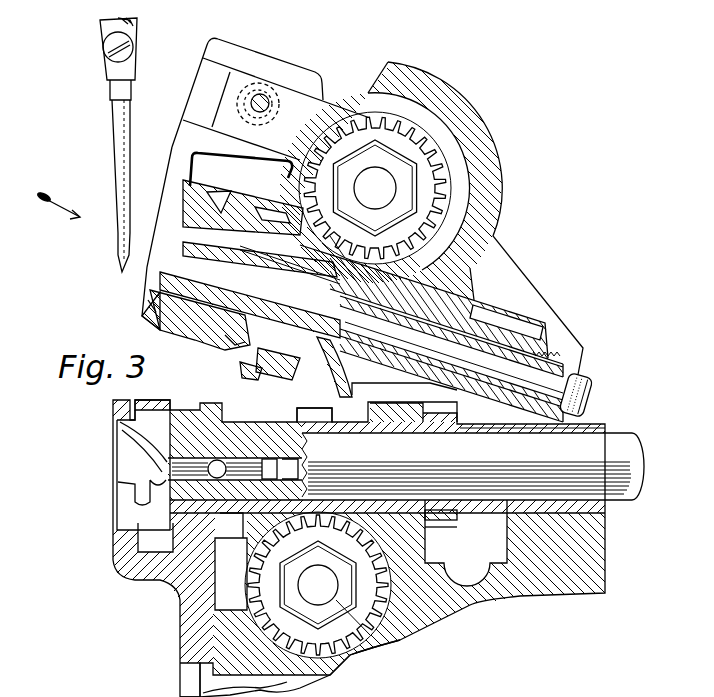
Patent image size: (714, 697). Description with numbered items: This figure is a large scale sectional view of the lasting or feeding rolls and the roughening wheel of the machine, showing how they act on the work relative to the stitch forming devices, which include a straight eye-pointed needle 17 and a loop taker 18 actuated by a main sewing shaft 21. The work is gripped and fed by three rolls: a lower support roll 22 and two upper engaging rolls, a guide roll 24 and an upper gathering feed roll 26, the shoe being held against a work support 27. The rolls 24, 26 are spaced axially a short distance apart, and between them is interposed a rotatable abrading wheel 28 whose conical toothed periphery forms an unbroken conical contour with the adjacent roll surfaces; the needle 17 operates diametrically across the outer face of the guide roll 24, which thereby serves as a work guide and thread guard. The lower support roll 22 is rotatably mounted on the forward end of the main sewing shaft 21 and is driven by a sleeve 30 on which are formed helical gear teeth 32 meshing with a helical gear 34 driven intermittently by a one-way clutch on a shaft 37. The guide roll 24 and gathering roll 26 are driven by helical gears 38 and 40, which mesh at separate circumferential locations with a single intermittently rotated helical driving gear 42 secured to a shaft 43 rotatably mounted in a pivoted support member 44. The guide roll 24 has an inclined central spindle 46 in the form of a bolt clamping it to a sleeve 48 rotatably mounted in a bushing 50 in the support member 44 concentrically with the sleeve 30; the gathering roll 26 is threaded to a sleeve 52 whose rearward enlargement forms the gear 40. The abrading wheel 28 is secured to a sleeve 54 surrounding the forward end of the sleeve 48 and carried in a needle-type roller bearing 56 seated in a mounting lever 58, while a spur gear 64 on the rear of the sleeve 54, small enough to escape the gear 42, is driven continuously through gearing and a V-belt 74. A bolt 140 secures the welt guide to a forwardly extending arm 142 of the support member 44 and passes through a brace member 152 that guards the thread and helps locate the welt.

The needle 17 is at (118, 168).
The loop taker 18 is at (125, 468).
The main sewing shaft 21 is at (630, 490).
The lower support roll 22 is at (148, 397).
The guide roll 24 is at (146, 305).
The upper gathering feed roll 26 is at (175, 327).
The work support 27 is at (113, 555).
The abrading wheel 28 is at (153, 322).
The sleeve 30 is at (458, 505).
The helical gear teeth 32 is at (297, 413).
The helical gear 34 is at (343, 647).
The shaft 37 is at (398, 630).
The helical gear 38 is at (338, 387).
The helical gear 40 is at (268, 370).
The helical driving gear 42 is at (442, 186).
The shaft 43 is at (388, 190).
The support member 44 is at (275, 190).
The central spindle 46 is at (543, 350).
The sleeve 48 is at (577, 372).
The bushing 50 is at (512, 318).
The sleeve 52 is at (288, 220).
The sleeve 54 is at (180, 227).
The needle-type roller bearing 56 is at (237, 210).
The mounting lever 58 is at (283, 218).
The spur gear 64 is at (370, 218).
The V-belt 74 is at (159, 680).
The bolt 140 is at (275, 105).
The forwardly extending arm 142 is at (243, 77).
The brace member 152 is at (165, 178).